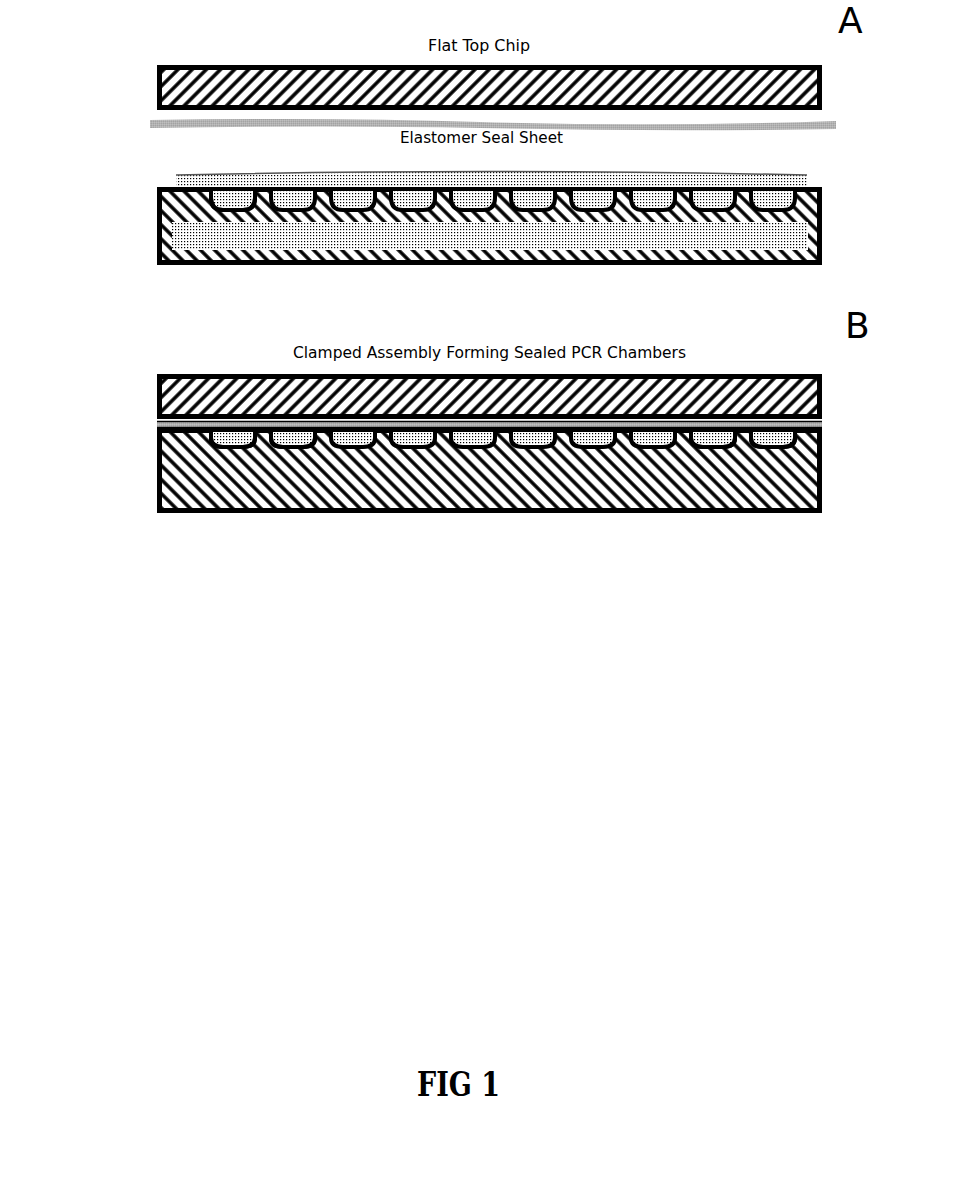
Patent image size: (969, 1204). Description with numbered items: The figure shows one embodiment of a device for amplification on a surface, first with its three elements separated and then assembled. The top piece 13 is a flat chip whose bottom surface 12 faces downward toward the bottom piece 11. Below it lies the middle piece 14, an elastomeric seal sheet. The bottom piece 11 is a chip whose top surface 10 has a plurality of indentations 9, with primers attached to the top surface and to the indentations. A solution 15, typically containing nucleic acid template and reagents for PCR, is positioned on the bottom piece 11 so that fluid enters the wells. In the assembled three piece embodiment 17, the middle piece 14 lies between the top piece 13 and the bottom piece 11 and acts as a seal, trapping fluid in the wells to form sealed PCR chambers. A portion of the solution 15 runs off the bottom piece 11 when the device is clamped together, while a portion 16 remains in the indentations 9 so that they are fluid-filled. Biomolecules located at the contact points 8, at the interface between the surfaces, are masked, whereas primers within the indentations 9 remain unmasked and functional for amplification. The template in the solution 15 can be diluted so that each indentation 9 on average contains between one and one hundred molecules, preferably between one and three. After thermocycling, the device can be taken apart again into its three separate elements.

The contact points 8 is at (797, 437).
The indentations 9 is at (328, 212).
The top surface 10 is at (142, 183).
The bottom piece 11 is at (143, 217).
The bottom surface 12 is at (142, 106).
The top piece 13 is at (142, 78).
The middle piece 14 is at (143, 125).
The solution 15 is at (178, 172).
The portion of the solution 16 is at (224, 450).
The assembled three piece embodiment 17 is at (835, 358).